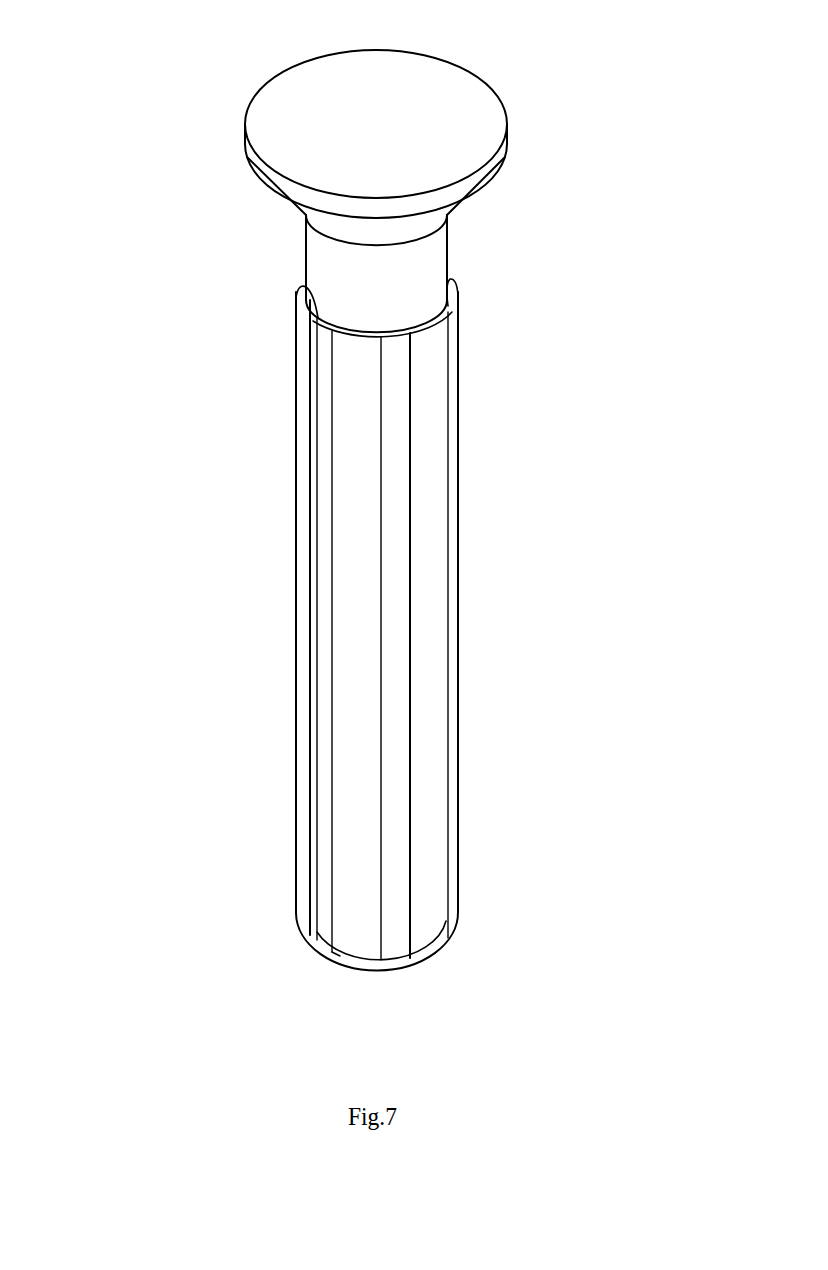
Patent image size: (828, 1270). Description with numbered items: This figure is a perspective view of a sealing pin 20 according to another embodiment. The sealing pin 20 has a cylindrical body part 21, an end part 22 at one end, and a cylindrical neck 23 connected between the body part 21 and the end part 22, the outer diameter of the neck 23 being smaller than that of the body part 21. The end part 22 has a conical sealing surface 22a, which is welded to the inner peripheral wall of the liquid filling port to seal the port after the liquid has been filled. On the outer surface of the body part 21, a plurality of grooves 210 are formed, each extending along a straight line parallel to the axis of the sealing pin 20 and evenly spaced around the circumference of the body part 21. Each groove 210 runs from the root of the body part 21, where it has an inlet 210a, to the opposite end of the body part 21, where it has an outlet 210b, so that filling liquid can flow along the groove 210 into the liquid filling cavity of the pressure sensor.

The sealing pin 20 is at (371, 528).
The body part 21 is at (433, 668).
The end part 22 is at (293, 93).
The conical sealing surface 22a is at (345, 227).
The neck 23 is at (435, 255).
The groove 210 is at (323, 530).
The inlet 210a is at (322, 328).
The outlet 210b is at (323, 945).